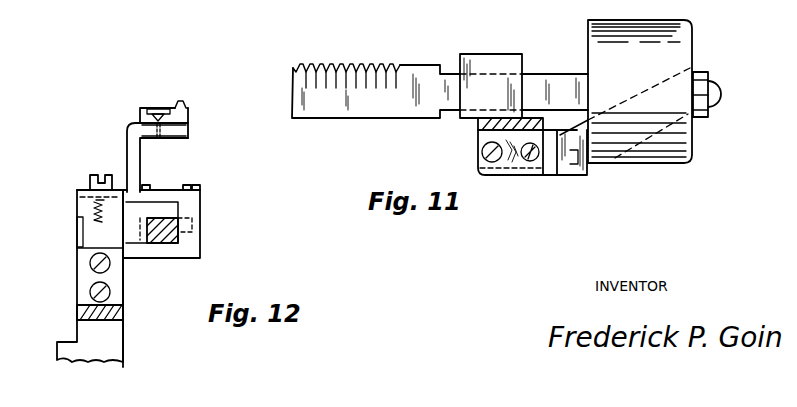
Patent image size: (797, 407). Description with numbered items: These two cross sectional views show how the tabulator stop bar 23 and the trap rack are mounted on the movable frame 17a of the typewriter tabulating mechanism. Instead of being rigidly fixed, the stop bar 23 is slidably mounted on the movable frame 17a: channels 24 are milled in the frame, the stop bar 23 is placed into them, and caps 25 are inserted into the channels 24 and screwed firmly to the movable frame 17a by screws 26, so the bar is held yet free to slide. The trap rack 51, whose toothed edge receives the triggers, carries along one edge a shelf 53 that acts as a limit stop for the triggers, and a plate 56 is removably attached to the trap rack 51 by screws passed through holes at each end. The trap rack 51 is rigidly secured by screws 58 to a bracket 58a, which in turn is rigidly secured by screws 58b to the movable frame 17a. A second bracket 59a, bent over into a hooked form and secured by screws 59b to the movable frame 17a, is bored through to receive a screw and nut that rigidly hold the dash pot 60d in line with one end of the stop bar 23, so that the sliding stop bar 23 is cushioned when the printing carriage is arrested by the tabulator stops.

In FIG. 11, the tabulator stop bar 23 is at (561, 52).
In FIG. 12, the tabulator stop bar 23 is at (167, 244).
In FIG. 12, the channels 24 is at (180, 208).
In FIG. 12, the caps 25 is at (152, 222).
In FIG. 12, the screws 26 is at (147, 187).
In FIG. 12, the movable frame 17a is at (92, 278).
In FIG. 12, the trap rack 51 is at (190, 112).
In FIG. 12, the shelf 53 is at (190, 121).
In FIG. 12, the plate 56 is at (160, 109).
In FIG. 12, the screws 58 is at (141, 122).
In FIG. 11, the bracket 58a is at (478, 124).
In FIG. 12, the bracket 58a is at (188, 135).
In FIG. 12, the screws 58b is at (90, 178).
In FIG. 11, the bracket 59a is at (588, 170).
In FIG. 12, the bracket 59a is at (123, 313).
In FIG. 11, the screws 59b is at (546, 160).
In FIG. 11, the dash pot 60d is at (640, 91).